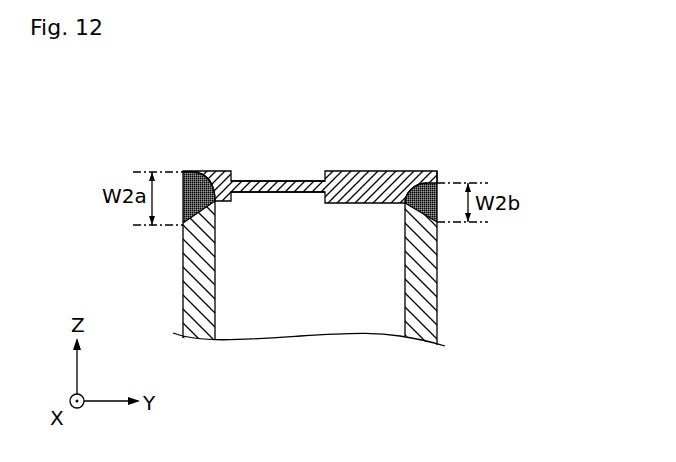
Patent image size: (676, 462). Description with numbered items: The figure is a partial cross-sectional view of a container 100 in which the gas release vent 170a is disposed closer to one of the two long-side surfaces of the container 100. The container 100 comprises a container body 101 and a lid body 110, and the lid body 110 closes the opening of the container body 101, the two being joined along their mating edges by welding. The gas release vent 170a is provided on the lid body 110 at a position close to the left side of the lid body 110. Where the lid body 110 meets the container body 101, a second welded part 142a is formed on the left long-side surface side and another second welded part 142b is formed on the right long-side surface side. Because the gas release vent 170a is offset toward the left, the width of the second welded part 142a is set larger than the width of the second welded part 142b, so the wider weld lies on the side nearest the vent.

The container 100 is at (307, 214).
The container body 101 is at (191, 279).
The lid body 110 is at (216, 171).
The gas release vent 170a is at (285, 181).
The second welded part 142a is at (215, 203).
The second welded part 142b is at (410, 204).